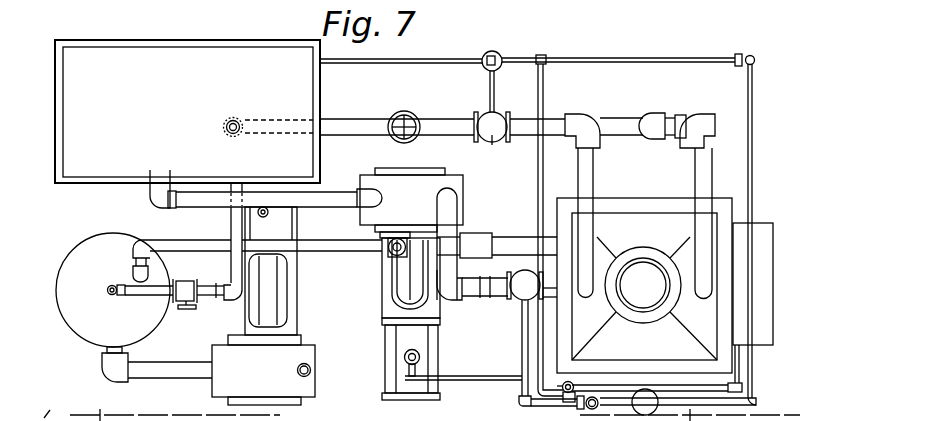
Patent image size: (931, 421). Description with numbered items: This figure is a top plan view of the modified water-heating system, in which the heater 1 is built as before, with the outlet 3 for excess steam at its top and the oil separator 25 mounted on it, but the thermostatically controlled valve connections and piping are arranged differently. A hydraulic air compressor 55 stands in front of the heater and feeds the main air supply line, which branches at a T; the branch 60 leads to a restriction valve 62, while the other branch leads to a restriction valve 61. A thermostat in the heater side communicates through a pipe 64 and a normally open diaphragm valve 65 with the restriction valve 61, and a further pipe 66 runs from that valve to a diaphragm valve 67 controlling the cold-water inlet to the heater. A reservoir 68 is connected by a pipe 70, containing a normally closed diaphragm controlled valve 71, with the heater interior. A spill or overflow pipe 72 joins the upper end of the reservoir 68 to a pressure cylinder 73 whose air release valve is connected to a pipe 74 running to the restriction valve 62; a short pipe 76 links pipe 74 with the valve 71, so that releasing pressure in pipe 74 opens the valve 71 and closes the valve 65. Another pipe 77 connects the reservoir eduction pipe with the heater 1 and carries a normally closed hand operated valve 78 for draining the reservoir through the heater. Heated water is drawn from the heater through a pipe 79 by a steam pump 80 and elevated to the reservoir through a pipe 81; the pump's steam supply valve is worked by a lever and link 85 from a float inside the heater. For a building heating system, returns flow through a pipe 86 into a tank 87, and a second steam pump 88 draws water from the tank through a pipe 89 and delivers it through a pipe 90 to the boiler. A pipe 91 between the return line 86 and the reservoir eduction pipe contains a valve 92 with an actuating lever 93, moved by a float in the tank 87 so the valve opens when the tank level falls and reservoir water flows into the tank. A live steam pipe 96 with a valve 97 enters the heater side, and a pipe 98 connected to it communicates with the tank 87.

The heater 1 is at (644, 285).
The outlet 3 is at (643, 285).
The oil separator 25 is at (753, 284).
The hydraulic air compressor 55 is at (649, 397).
The branch 60 is at (752, 165).
The restriction valve 61 is at (597, 398).
The restriction valve 62 is at (759, 58).
The pipe 64 is at (740, 365).
The diaphragm valve 65 is at (571, 383).
The pipe 66 is at (523, 343).
The diaphragm valve 67 is at (522, 300).
The reservoir 68 is at (269, 128).
The pipe 70 is at (368, 128).
The diaphragm controlled valve 71 is at (493, 143).
The spill or overflow pipe 72 is at (436, 64).
The pressure cylinder 73 is at (500, 57).
The pipe 74 is at (647, 58).
The short pipe 76 is at (489, 92).
The pipe 77 is at (616, 118).
The hand operated valve 78 is at (410, 143).
The pipe 79 is at (476, 298).
The steam pump 80 is at (392, 290).
The pipe 81 is at (338, 200).
The link 85 is at (485, 377).
The pipe 86 is at (115, 297).
The tank 87 is at (113, 290).
The steam pump 88 is at (263, 370).
The pipe 89 is at (181, 374).
The pipe 90 is at (311, 370).
The pipe 91 is at (217, 297).
The valve 92 is at (187, 283).
The actuating lever 93 is at (189, 311).
The live steam pipe 96 is at (508, 247).
The valve 97 is at (385, 258).
The pipe 98 is at (197, 250).